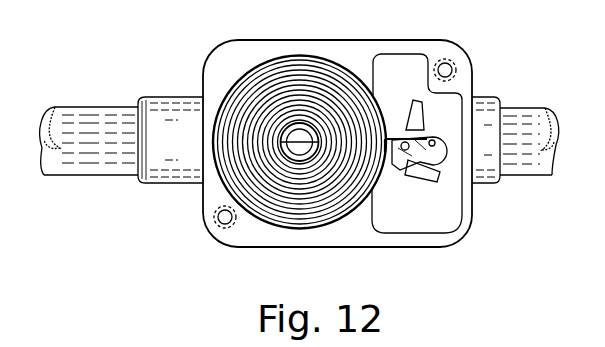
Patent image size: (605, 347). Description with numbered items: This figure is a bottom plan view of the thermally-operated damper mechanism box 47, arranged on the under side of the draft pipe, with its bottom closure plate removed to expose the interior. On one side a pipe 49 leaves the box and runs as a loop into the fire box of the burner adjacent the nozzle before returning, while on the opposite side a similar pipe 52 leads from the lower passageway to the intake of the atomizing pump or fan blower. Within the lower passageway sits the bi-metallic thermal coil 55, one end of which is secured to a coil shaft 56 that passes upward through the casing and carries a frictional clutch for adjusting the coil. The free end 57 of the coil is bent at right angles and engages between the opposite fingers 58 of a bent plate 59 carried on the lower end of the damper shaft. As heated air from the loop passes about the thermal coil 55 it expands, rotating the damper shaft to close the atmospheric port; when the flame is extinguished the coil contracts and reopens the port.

The thermally-operated damper mechanism box 47 is at (212, 73).
The pipe 49 is at (115, 113).
The pipe 52 is at (521, 178).
The bi-metallic thermal coil 55 is at (333, 72).
The coil shaft 56 is at (298, 152).
The free end of the coil 57 is at (395, 134).
The fingers 58 is at (421, 122).
The bent plate 59 is at (407, 170).